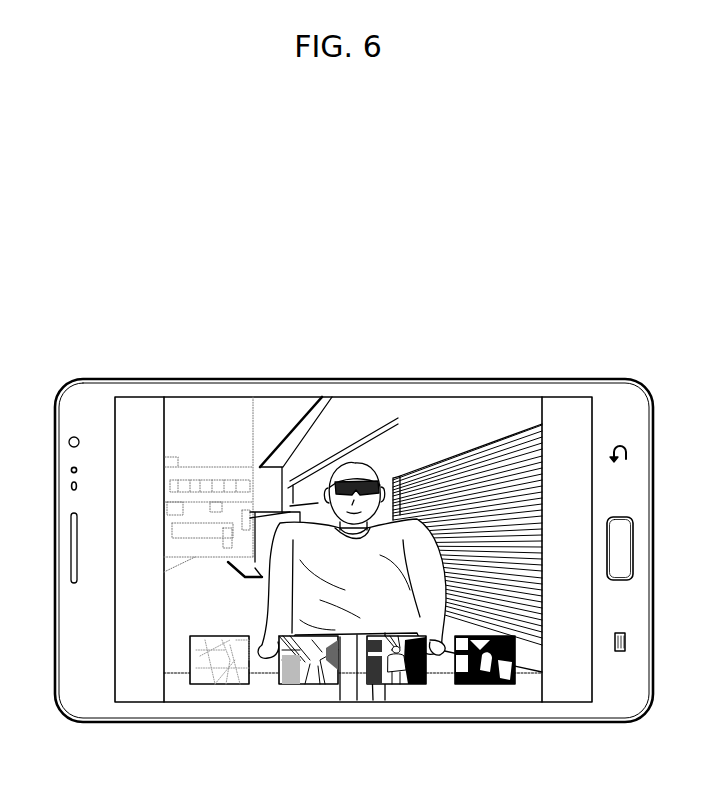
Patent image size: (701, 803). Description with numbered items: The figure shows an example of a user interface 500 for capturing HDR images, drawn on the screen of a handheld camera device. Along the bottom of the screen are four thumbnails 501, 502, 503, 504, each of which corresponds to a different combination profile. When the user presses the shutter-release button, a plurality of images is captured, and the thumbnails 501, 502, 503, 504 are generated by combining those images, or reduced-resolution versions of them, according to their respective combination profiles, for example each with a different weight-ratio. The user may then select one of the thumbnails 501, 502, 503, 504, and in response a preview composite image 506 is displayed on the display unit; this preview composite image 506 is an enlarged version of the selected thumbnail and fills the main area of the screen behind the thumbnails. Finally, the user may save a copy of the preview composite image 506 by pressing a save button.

The user interface 500 is at (496, 294).
The preview composite image 506 is at (220, 397).
The thumbnail 501 is at (221, 687).
The thumbnail 502 is at (313, 687).
The thumbnail 503 is at (407, 687).
The thumbnail 504 is at (500, 687).